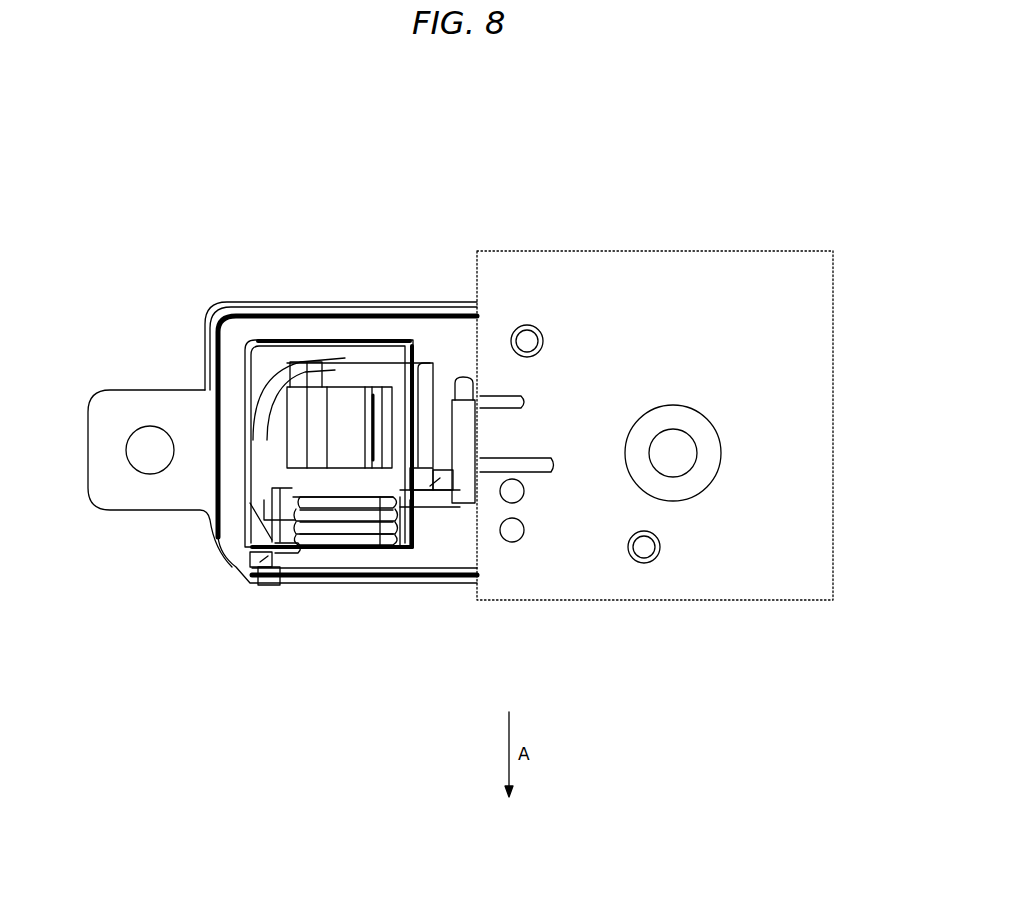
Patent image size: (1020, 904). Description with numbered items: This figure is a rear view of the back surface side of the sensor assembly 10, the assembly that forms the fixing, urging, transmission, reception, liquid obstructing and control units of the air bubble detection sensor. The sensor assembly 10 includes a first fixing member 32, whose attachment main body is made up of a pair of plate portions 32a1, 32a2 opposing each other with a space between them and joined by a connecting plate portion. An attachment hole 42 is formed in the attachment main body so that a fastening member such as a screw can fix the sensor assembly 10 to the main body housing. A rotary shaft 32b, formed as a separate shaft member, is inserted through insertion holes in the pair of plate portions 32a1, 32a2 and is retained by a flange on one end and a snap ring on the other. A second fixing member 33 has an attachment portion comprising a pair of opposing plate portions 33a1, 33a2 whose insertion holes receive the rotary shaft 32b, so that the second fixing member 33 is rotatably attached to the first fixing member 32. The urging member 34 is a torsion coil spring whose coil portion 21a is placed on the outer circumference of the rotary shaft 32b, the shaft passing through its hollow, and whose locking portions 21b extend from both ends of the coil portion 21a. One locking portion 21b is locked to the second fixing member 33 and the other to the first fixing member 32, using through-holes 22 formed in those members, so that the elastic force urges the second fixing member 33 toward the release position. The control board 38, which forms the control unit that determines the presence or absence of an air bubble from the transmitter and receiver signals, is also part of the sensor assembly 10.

The sensor assembly 10 is at (217, 170).
The attachment hole 42 is at (139, 474).
The first fixing member 32 is at (342, 436).
The plate portion 32a1 is at (400, 330).
The plate portion 32a2 is at (437, 575).
The rotary shaft 32b is at (338, 370).
The second fixing member 33 is at (290, 450).
The plate portion 33a1 is at (345, 398).
The plate portion 33a2 is at (355, 478).
The coil portion 21a is at (368, 535).
The locking portion 21b is at (433, 467).
The through-hole 22 is at (440, 478).
The urging member 34 is at (281, 516).
The control board 38 is at (643, 293).